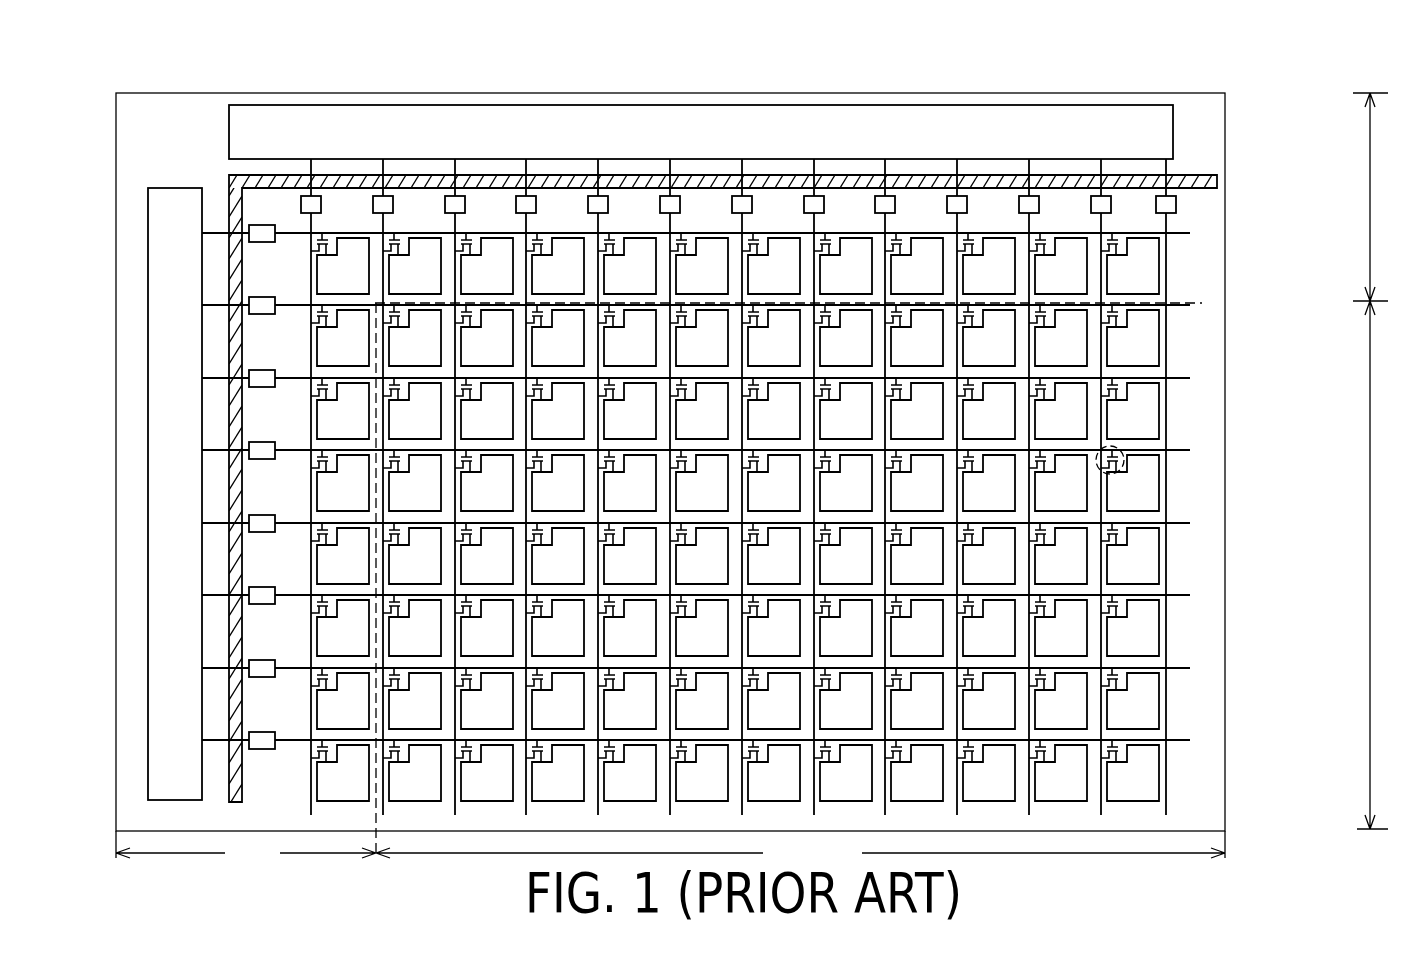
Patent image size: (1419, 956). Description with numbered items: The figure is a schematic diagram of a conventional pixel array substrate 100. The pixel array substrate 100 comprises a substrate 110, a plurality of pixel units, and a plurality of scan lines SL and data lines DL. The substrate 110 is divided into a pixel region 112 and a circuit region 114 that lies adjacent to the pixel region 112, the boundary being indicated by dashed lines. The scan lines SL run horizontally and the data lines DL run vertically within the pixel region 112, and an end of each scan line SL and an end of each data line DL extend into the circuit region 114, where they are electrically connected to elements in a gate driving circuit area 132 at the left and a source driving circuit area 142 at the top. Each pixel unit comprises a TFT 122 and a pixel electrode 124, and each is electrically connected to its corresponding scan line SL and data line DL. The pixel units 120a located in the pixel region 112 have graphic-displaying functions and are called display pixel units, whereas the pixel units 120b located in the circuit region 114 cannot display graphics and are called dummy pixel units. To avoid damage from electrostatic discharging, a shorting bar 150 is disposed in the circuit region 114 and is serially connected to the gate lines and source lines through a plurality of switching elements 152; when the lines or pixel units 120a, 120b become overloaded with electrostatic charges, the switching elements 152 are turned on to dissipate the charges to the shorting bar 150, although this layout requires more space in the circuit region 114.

The pixel array substrate 100 is at (1322, 912).
The substrate 110 is at (1215, 778).
The pixel region 112 is at (896, 586).
The circuit region 114 is at (767, 482).
The display pixel unit 120a is at (1221, 475).
The dummy pixel unit 120b is at (1173, 274).
The TFT 122 is at (1124, 452).
The pixel electrode 124 is at (1143, 497).
The gate driving circuit area 132 is at (158, 254).
The source driving circuit area 142 is at (1060, 118).
The shorting bar 150 is at (882, 186).
The switching element 152 is at (962, 204).
The data line DL is at (1167, 703).
The scan line SL is at (1185, 735).